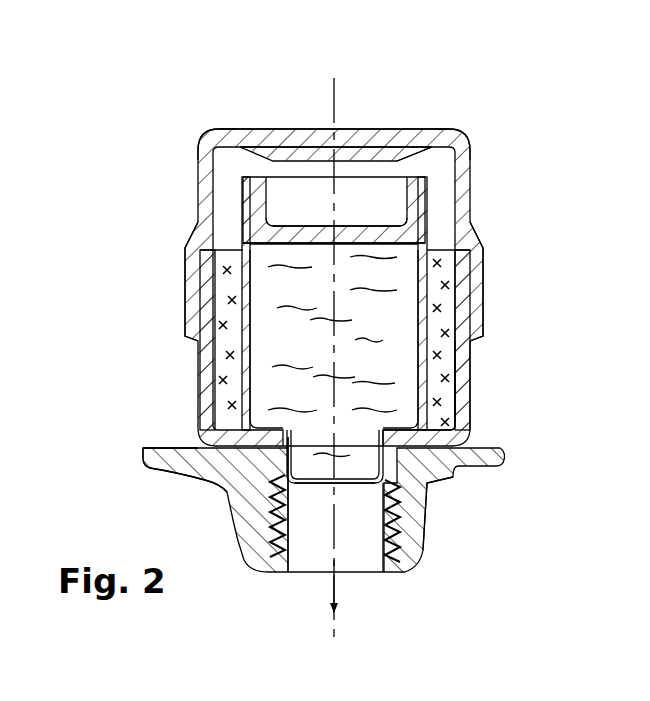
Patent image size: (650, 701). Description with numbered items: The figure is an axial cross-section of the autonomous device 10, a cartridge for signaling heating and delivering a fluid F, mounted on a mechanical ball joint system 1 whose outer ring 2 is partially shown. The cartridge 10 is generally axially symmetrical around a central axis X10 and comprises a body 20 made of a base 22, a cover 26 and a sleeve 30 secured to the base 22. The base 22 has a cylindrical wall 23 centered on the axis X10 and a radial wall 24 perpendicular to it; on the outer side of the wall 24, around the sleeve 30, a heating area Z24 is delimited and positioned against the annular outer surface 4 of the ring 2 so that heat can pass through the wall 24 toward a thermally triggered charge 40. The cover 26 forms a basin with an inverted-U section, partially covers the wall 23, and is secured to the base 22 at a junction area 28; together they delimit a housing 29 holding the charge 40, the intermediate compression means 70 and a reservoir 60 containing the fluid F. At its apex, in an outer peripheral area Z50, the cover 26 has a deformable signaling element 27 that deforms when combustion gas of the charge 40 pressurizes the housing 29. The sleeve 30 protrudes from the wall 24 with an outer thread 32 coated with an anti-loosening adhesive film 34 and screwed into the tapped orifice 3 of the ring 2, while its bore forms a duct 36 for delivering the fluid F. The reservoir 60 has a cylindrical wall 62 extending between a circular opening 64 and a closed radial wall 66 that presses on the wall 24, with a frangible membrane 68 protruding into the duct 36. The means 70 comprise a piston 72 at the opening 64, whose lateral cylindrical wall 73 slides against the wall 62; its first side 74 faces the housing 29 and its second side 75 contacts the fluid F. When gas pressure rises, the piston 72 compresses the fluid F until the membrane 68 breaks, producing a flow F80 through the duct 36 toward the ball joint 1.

The system 1 is at (100, 421).
The outer ring 2 is at (143, 455).
The orifice 3 is at (280, 572).
The annular outer surface 4 is at (157, 446).
The autonomous device 10 is at (178, 120).
The body 20 is at (460, 352).
The base 22 is at (550, 355).
The cylindrical wall 23 is at (460, 385).
The radial wall 24 is at (440, 438).
The cover 26 is at (212, 132).
The signaling element 27 is at (279, 146).
The junction area 28 is at (480, 296).
The housing 29 is at (225, 213).
The sleeve 30 is at (387, 580).
The outer thread 32 is at (407, 552).
The anti-loosening adhesive film 34 is at (407, 510).
The duct 36 is at (357, 548).
The thermally triggered charge 40 is at (223, 298).
The reservoir 60 is at (243, 373).
The cylindrical wall 62 is at (215, 324).
The circular opening 64 is at (424, 172).
The radial wall 66 is at (233, 455).
The membrane 68 is at (360, 490).
The intermediate compression means 70 is at (408, 166).
The piston 72 is at (356, 228).
The lateral cylindrical wall 73 is at (425, 214).
The first side 74 is at (311, 206).
The second side 75 is at (348, 250).
The fluid F is at (280, 283).
The flow F80 is at (309, 586).
The outer peripheral area Z50 is at (348, 96).
The heating area Z24 is at (215, 490).
The central axis X10 is at (335, 658).